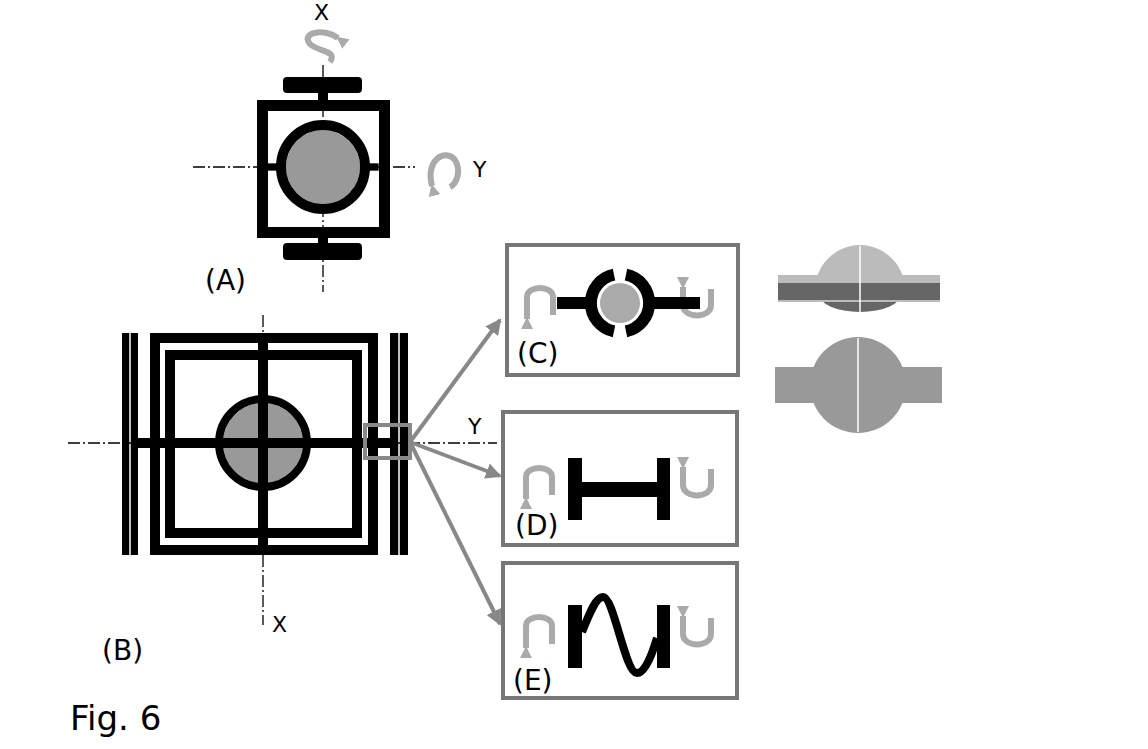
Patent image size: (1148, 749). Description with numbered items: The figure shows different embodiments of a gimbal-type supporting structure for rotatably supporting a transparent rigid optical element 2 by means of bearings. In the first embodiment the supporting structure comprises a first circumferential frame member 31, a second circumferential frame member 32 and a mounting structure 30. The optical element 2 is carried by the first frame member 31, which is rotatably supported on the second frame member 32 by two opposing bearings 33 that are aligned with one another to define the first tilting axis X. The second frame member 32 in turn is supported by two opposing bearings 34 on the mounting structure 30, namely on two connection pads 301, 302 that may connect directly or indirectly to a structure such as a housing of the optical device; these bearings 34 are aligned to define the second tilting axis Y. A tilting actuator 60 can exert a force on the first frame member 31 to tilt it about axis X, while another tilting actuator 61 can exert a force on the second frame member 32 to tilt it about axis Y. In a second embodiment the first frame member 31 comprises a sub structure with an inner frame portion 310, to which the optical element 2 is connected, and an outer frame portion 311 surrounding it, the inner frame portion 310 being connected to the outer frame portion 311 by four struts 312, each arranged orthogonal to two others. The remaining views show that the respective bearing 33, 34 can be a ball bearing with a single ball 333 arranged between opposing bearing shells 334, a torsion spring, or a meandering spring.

The transparent rigid optical element 2 is at (355, 150).
The mounting structure 30 is at (248, 135).
The first frame member 31 is at (275, 188).
The second frame member 32 is at (390, 210).
The bearing 33 is at (258, 112).
The bearing 34 is at (332, 95).
The tilting actuator 60 is at (342, 36).
The tilting actuator 61 is at (460, 152).
The connection pad 301 is at (290, 77).
The connection pad 302 is at (362, 255).
The inner frame portion 310 is at (234, 414).
The outer frame portion 311 is at (180, 557).
The strut 312 is at (198, 452).
The ball 333 is at (617, 297).
The bearing shell 334 is at (605, 270).